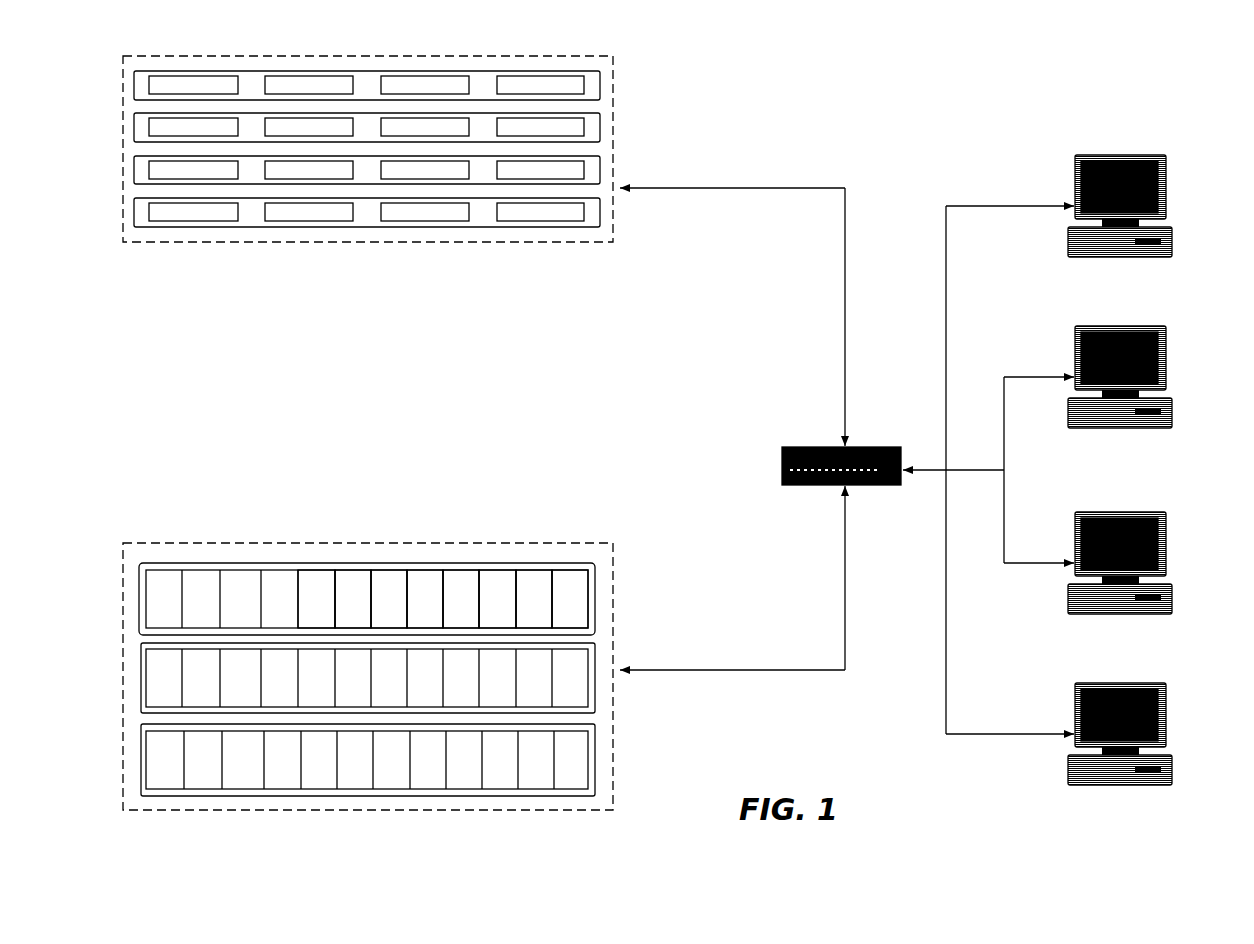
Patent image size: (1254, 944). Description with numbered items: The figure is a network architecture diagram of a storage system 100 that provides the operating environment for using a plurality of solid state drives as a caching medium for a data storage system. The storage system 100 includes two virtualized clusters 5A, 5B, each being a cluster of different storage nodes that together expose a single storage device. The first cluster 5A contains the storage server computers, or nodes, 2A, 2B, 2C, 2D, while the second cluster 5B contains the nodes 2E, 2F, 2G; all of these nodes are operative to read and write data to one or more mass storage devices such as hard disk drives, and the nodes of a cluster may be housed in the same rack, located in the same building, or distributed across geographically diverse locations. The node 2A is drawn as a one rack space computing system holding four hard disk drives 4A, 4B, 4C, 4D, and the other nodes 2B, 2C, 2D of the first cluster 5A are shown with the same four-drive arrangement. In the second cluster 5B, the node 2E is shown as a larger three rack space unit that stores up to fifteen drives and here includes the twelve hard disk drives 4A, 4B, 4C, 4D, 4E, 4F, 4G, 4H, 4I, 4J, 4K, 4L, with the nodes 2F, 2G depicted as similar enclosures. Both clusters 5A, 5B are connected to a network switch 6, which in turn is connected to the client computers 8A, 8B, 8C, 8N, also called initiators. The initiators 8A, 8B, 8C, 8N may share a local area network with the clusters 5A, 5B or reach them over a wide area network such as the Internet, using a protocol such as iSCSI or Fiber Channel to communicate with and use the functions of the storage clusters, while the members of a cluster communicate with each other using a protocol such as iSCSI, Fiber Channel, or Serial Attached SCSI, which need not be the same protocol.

The storage system 100 is at (917, 84).
The virtualized cluster 5A is at (607, 83).
The virtualized cluster 5B is at (603, 563).
The storage server computer 2A is at (593, 97).
The storage server computer 2B is at (595, 138).
The storage server computer 2C is at (595, 182).
The storage server computer 2D is at (595, 225).
The storage server computer 2E is at (594, 586).
The storage server computer 2F is at (594, 652).
The storage server computer 2G is at (594, 732).
The hard disk drive 4A is at (193, 343).
The hard disk drive 4B is at (271, 343).
The hard disk drive 4C is at (349, 343).
The hard disk drive 4D is at (426, 343).
The hard disk drive 4E is at (316, 599).
The hard disk drive 4F is at (353, 599).
The hard disk drive 4G is at (389, 599).
The hard disk drive 4H is at (425, 599).
The hard disk drive 4I is at (461, 599).
The hard disk drive 4J is at (497, 599).
The hard disk drive 4K is at (534, 599).
The hard disk drive 4L is at (570, 599).
The network switch 6 is at (878, 487).
The client computer 8A is at (1155, 255).
The client computer 8B is at (1155, 426).
The client computer 8C is at (1155, 612).
The client computer 8N is at (1155, 783).